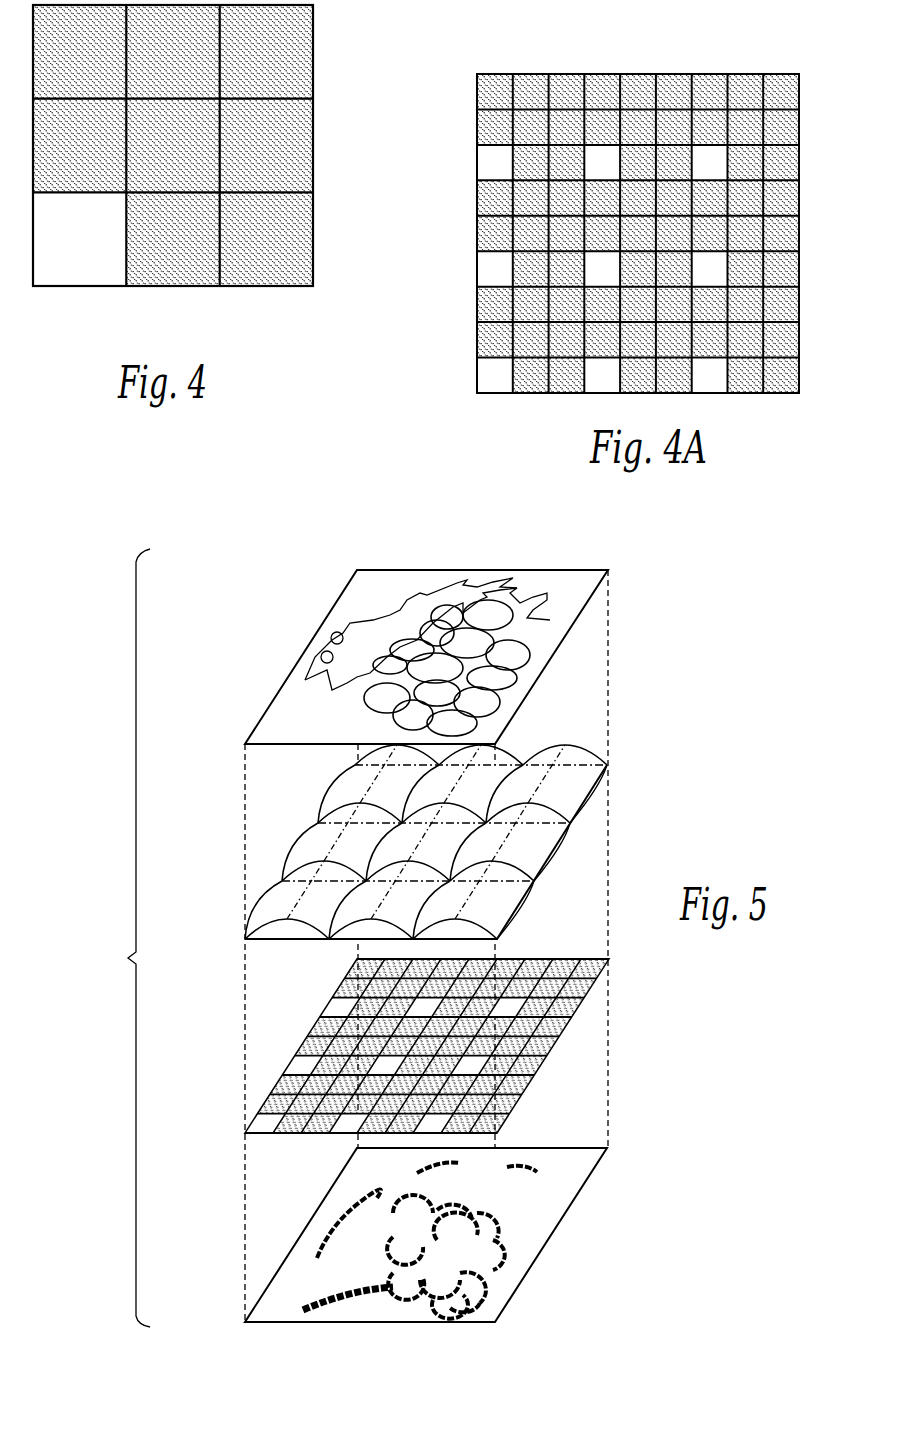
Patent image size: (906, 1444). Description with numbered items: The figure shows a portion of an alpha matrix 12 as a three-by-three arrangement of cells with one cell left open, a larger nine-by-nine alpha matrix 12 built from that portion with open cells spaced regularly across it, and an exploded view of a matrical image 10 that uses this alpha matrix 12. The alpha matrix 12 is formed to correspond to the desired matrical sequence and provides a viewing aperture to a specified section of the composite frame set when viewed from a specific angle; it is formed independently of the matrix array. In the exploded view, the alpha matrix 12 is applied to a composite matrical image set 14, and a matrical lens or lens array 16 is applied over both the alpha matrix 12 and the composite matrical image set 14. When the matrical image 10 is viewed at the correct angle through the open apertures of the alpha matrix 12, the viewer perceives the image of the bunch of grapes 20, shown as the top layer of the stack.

In FIG. 5, the matrical image 10 is at (121, 938).
In FIG. 4A, the alpha matrix 12 is at (492, 316).
In FIG. 5, the alpha matrix 12 is at (460, 1046).
In FIG. 5, the composite matrical image set 14 is at (325, 1210).
In FIG. 5, the matrical lens or lens array 16 is at (323, 847).
In FIG. 5, the bunch of grapes 20 is at (330, 630).